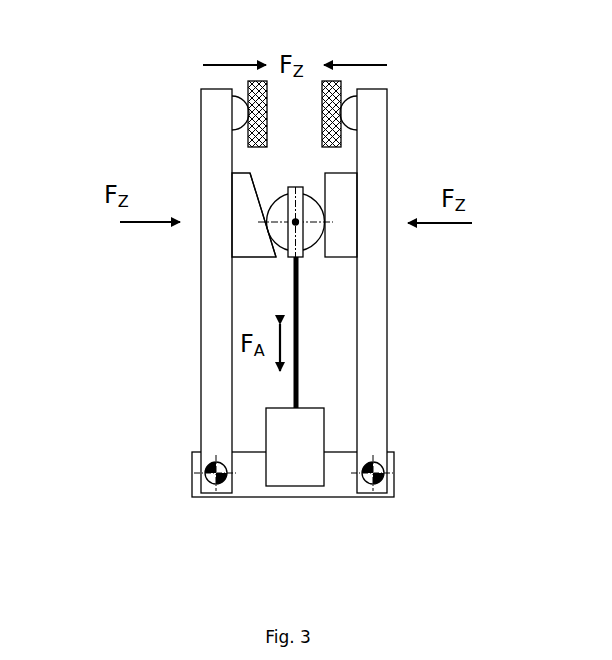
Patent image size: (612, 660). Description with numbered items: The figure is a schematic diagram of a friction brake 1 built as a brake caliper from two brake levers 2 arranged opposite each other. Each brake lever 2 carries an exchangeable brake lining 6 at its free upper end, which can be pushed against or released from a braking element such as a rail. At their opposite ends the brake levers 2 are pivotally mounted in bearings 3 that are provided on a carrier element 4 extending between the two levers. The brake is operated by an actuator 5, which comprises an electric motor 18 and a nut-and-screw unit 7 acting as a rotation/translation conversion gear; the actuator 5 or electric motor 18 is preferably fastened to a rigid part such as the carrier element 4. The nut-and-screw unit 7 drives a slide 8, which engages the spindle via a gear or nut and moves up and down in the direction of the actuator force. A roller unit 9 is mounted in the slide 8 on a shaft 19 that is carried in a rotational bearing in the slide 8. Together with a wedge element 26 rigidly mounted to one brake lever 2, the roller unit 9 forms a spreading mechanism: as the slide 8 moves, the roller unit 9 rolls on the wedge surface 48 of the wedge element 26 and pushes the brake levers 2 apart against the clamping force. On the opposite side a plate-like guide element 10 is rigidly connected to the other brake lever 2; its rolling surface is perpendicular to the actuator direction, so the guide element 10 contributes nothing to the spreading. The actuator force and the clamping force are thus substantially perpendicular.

The friction brake 1 is at (160, 417).
The brake levers 2 is at (217, 343).
The bearings 3 is at (216, 473).
The carrier element 4 is at (253, 480).
The actuator 5 is at (318, 314).
The brake lining 6 is at (253, 100).
The nut-and-screw unit 7 is at (297, 357).
The slide 8 is at (302, 247).
The roller unit 9 is at (312, 233).
The guide element 10 is at (345, 192).
The electric motor 18 is at (295, 453).
The shaft 19 is at (297, 221).
The wedge element 26 is at (243, 200).
The wedge surface 48 is at (261, 203).